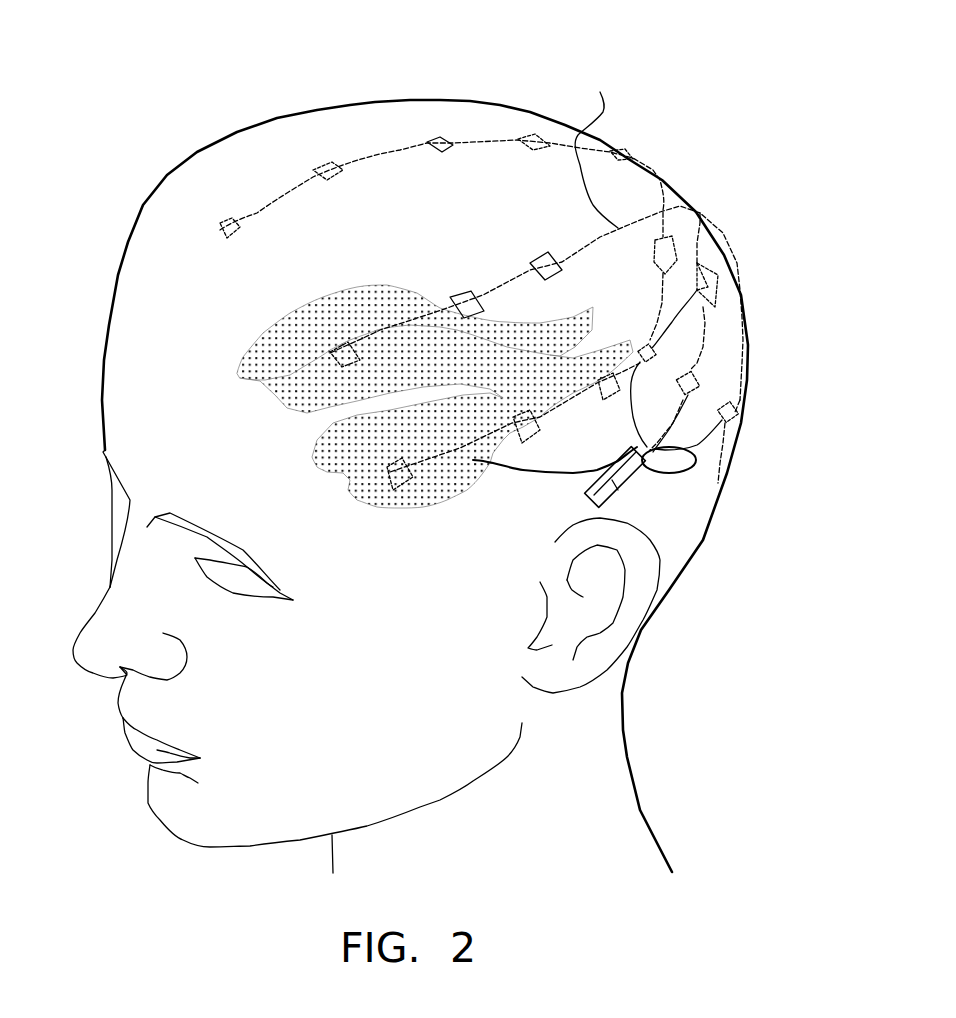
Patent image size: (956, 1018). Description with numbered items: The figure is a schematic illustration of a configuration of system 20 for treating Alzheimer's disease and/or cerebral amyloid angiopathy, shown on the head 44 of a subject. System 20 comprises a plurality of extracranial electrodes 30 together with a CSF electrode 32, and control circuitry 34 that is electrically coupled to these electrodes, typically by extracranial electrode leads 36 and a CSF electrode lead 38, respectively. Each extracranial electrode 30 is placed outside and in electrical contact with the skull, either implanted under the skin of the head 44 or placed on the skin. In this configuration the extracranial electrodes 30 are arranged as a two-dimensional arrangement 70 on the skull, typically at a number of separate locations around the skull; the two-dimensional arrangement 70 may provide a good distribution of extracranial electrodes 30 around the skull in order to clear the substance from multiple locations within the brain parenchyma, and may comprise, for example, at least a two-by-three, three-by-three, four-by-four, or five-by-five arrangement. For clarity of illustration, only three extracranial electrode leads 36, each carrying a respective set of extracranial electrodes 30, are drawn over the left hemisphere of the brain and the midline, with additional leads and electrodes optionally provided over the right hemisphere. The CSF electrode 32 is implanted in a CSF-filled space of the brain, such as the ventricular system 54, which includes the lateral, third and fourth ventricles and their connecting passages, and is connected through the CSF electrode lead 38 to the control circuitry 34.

The system 20 is at (760, 377).
The extracranial electrode 30 is at (340, 165).
The CSF electrode 32 is at (478, 462).
The control circuitry 34 is at (613, 483).
The extracranial electrode lead 36 is at (567, 436).
The CSF electrode lead 38 is at (693, 465).
The head 44 is at (118, 337).
The ventricular system 54 is at (387, 517).
The two-dimensional arrangement 70 is at (450, 80).